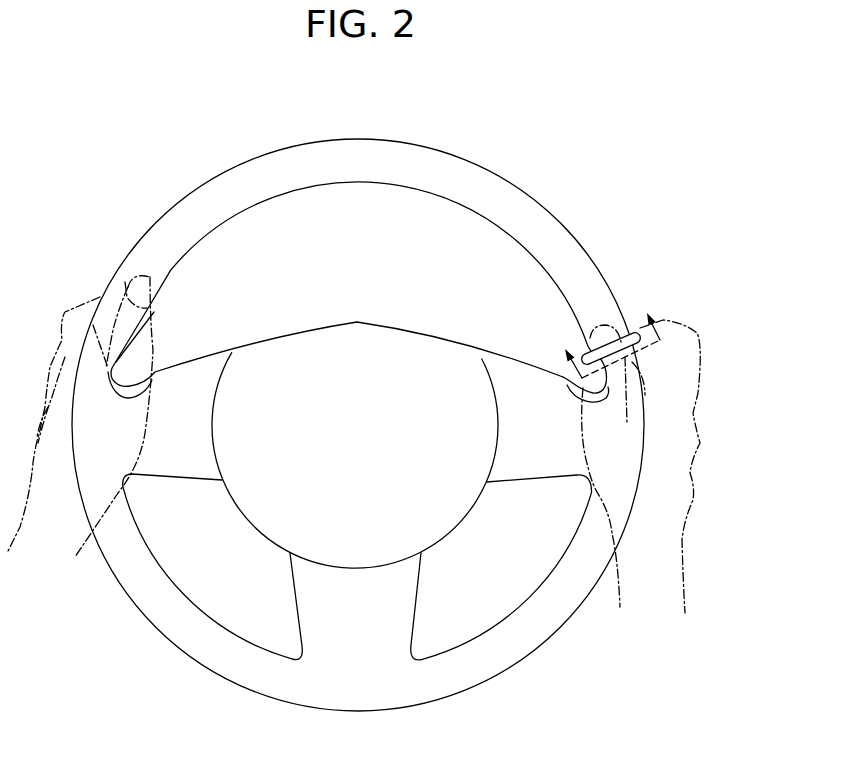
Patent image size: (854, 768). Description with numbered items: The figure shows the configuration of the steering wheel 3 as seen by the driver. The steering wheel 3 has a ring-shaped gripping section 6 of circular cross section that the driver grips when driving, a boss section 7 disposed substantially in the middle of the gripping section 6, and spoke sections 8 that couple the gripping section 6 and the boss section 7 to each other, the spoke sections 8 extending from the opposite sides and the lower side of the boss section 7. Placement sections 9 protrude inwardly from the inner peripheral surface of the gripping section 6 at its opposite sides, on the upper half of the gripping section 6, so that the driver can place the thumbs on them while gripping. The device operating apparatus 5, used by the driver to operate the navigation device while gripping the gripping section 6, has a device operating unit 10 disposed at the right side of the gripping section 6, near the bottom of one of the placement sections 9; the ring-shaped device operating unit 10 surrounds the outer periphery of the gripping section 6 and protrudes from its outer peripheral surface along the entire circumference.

The steering wheel 3 is at (550, 114).
The device operating apparatus 5 is at (698, 292).
The gripping section 6 is at (537, 202).
The boss section 7 is at (330, 367).
The spoke sections 8 is at (520, 360).
The placement sections 9 is at (553, 297).
The device operating unit 10 is at (633, 330).